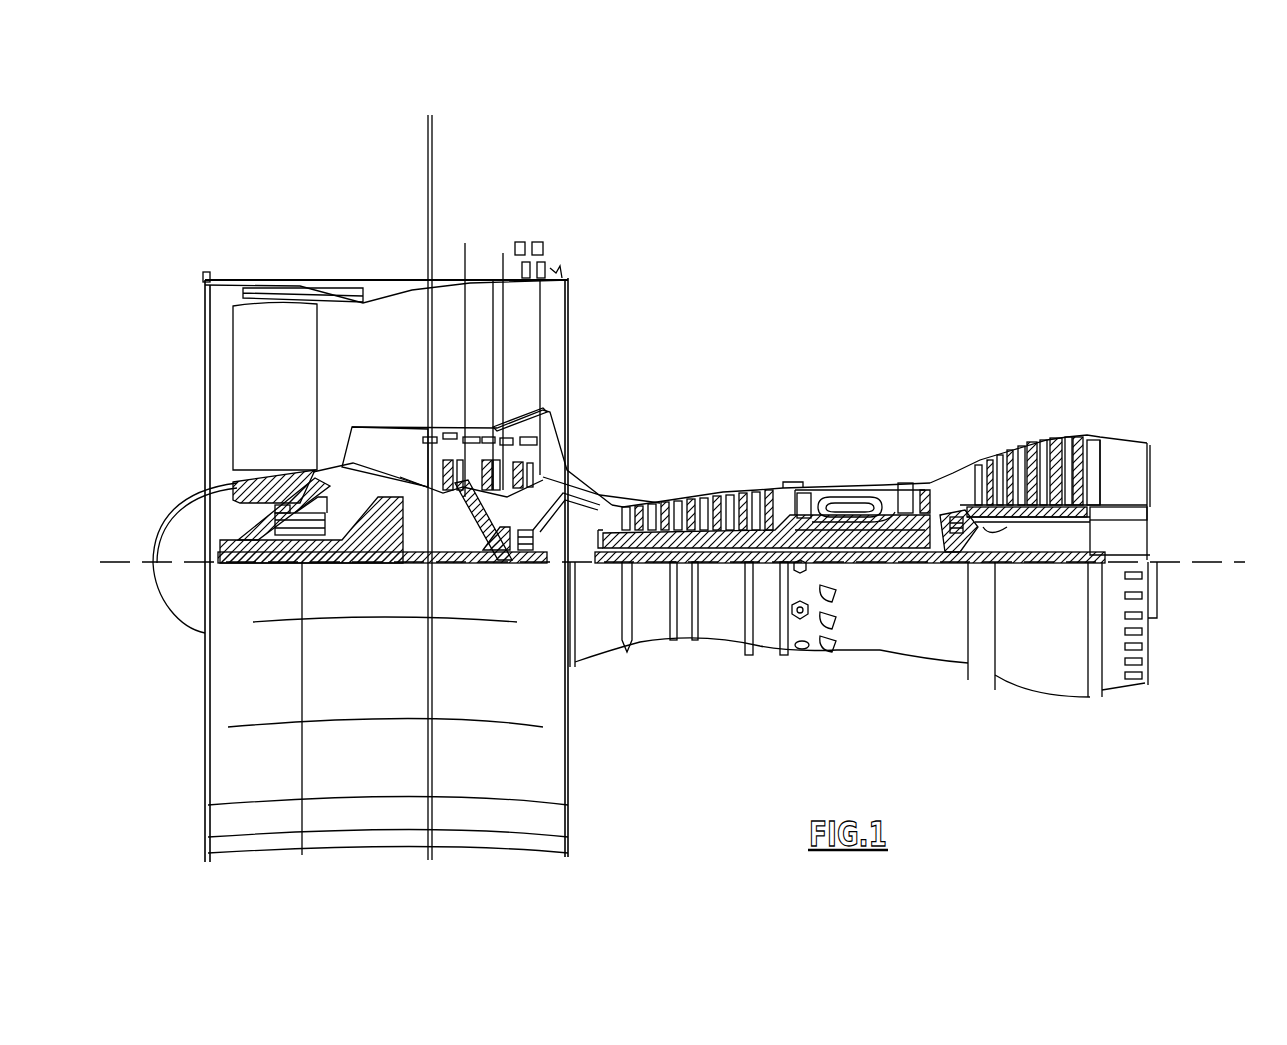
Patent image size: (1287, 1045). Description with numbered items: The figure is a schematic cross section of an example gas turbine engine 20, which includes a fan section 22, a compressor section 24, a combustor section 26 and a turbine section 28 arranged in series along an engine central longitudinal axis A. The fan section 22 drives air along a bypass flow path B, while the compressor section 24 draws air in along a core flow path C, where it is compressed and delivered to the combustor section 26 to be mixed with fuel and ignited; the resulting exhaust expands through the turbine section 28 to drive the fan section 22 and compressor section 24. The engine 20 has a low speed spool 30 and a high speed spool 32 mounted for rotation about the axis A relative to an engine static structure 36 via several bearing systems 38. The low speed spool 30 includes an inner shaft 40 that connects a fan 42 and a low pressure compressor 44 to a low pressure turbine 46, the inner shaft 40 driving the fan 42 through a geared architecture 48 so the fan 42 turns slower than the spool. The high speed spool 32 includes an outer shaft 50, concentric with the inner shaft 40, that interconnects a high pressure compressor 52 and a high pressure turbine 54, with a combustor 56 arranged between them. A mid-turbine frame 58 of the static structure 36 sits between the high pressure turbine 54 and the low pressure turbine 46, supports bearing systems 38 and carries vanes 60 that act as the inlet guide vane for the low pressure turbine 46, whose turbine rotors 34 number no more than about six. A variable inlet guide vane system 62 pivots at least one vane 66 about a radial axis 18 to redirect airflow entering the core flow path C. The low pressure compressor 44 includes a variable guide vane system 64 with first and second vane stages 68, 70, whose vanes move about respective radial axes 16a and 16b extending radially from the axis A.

The gas turbine engine 20 is at (853, 329).
The fan section 22 is at (415, 253).
The compressor section 24 is at (825, 396).
The combustor section 26 is at (835, 396).
The turbine section 28 is at (938, 396).
The radial axis 18 is at (432, 170).
The radial axis 16a is at (465, 250).
The radial axis 16b is at (505, 263).
The fan 42 is at (259, 408).
The low speed spool 30 is at (725, 574).
The high speed spool 32 is at (767, 520).
The turbine rotors 34 is at (1047, 527).
The engine static structure 36 is at (767, 662).
The bearing systems 38 is at (283, 563).
The inner shaft 40 is at (593, 566).
The low pressure compressor section 44 is at (548, 420).
The low pressure turbine section 46 is at (1035, 447).
The geared architecture 48 is at (388, 552).
The outer shaft 50 is at (845, 548).
The high pressure compressor section 52 is at (703, 533).
The high pressure turbine section 54 is at (908, 480).
The combustor 56 is at (843, 503).
The mid-turbine frame 58 is at (946, 465).
The vanes 60 is at (983, 534).
The variable inlet guide vane system 62 is at (445, 405).
The variable guide vane system 64 is at (512, 408).
The variable inlet guide vane 66 is at (428, 475).
The first vane stage 68 is at (472, 487).
The second vane stage 70 is at (545, 468).
The engine central longitudinal axis A is at (1240, 562).
The bypass flow path B is at (437, 353).
The core flow path C is at (384, 458).